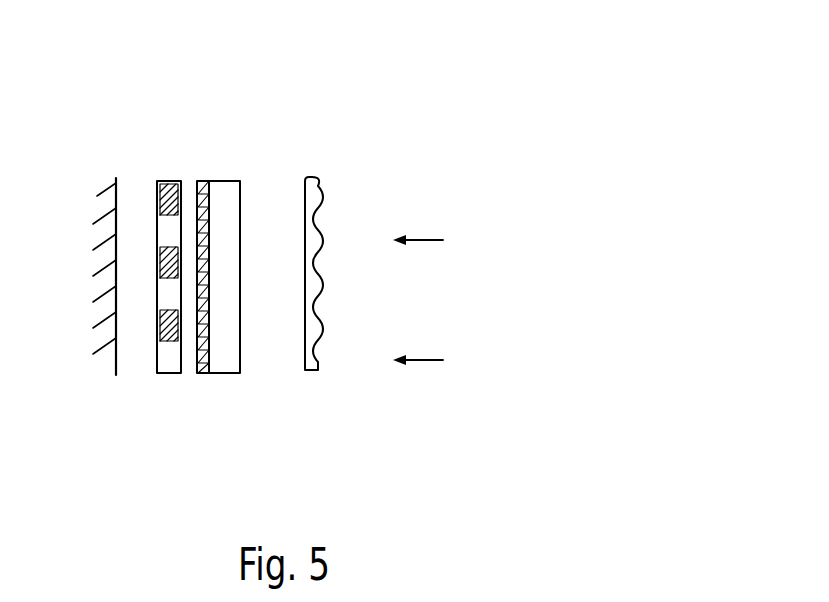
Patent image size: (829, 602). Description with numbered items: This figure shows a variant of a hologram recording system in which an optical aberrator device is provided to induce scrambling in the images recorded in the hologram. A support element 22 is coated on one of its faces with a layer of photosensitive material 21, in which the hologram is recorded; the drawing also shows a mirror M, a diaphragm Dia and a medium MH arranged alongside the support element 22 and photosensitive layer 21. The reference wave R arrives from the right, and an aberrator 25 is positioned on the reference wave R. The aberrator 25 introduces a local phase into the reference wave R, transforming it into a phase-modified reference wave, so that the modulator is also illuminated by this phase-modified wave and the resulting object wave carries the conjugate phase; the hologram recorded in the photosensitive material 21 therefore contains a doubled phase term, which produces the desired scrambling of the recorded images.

The layer of photosensitive material 21 is at (199, 373).
The support element 22 is at (225, 355).
The aberrator 25 is at (318, 361).
The mirror M is at (107, 255).
The diaphragm Dia is at (167, 180).
The holographic medium MH is at (187, 182).
The reference wave R is at (431, 300).